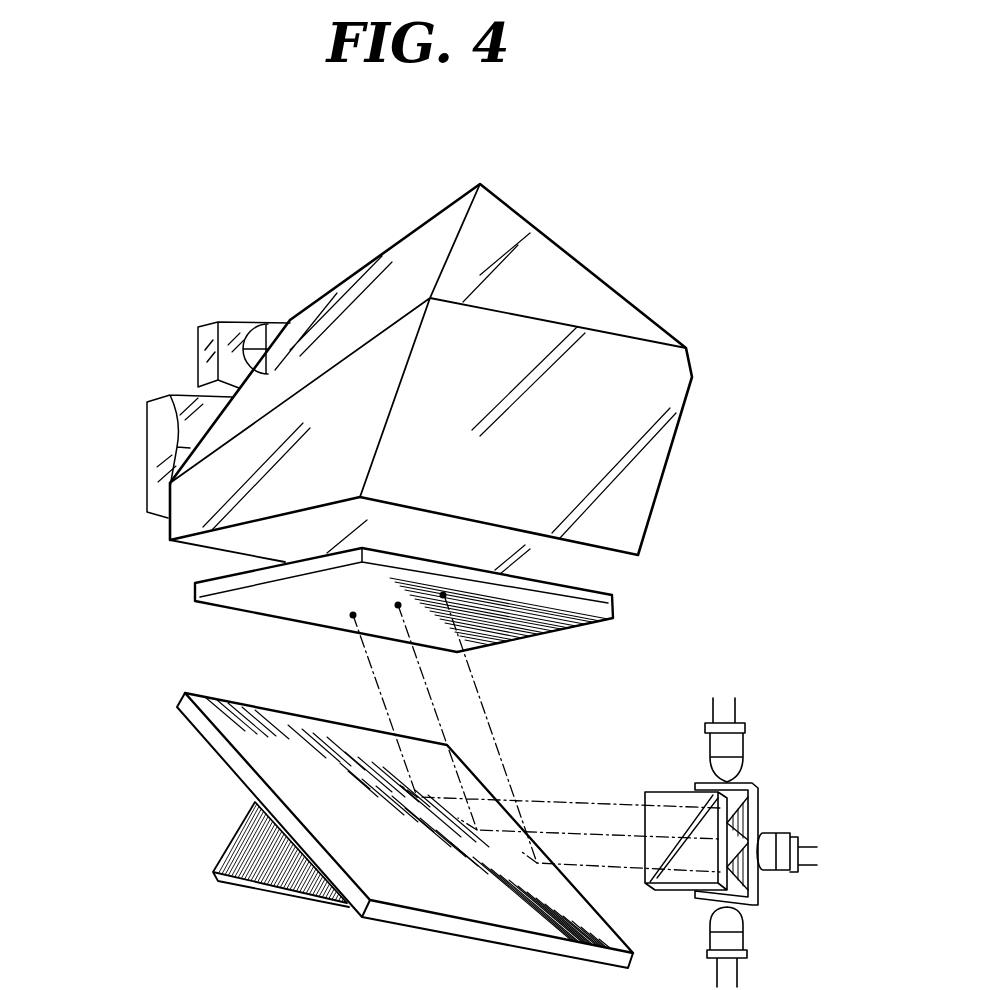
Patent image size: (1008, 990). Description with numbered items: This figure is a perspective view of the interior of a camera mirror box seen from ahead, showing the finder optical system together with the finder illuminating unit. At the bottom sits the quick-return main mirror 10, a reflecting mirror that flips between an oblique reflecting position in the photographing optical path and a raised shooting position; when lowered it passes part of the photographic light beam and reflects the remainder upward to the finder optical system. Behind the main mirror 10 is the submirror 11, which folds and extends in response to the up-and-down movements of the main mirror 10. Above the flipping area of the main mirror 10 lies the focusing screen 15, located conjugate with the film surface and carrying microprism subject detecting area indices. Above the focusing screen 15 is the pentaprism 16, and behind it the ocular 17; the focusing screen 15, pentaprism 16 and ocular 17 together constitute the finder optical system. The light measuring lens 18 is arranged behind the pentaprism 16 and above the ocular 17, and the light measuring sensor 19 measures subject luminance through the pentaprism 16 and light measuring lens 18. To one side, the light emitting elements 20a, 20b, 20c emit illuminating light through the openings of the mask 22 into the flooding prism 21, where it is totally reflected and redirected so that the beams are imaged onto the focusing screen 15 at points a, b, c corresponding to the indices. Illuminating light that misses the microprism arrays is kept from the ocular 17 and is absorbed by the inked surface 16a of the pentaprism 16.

The quick-return main mirror 10 is at (195, 723).
The submirror 11 is at (230, 848).
The focusing screen 15 is at (193, 585).
The pentaprism 16 is at (587, 262).
The inked surface 16a is at (363, 383).
The ocular 17 is at (150, 441).
The light measuring lens 18 is at (270, 330).
The light measuring sensor 19 is at (207, 345).
The light emitting element 20a is at (795, 838).
The light emitting element 20b is at (740, 747).
The light emitting element 20c is at (740, 933).
The flooding prism 21 is at (670, 805).
The mask 22 is at (760, 807).
The light incident point a is at (398, 605).
The light incident point b is at (353, 615).
The light incident point c is at (443, 595).